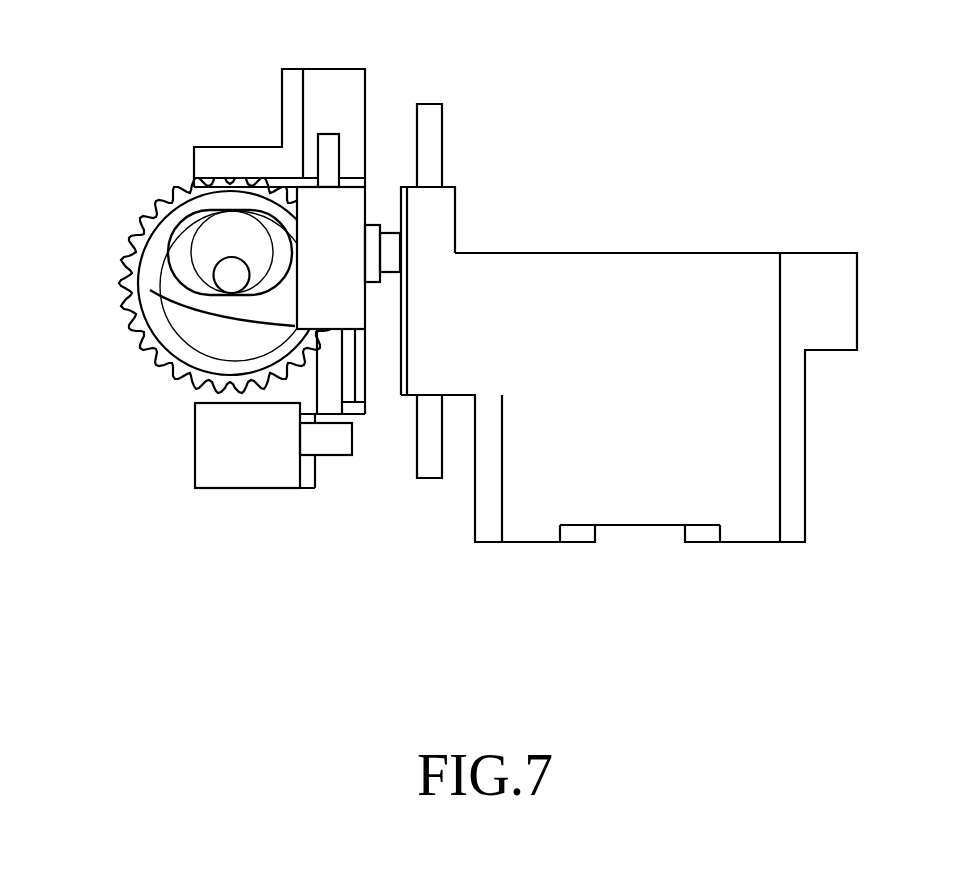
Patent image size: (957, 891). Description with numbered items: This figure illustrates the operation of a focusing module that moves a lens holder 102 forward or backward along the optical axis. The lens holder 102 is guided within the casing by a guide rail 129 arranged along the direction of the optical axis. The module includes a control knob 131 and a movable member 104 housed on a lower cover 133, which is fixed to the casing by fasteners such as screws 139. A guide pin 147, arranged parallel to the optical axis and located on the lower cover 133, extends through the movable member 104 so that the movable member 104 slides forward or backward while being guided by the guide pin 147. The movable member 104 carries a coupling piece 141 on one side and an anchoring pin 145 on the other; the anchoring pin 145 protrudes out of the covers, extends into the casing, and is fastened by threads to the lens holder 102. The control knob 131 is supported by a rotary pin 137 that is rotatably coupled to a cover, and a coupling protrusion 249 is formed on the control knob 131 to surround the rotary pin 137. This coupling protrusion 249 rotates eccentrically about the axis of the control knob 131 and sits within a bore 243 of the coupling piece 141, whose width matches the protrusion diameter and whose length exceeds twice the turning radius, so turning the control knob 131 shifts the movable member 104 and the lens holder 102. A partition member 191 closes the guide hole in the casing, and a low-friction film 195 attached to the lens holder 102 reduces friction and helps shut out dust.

The lens holder 102 is at (722, 258).
The movable member 104 is at (337, 205).
The guide rail 129 is at (427, 465).
The control knob 131 is at (128, 258).
The lower cover 133 is at (213, 447).
The rotary pin 137 is at (223, 277).
The screw 139 is at (322, 438).
The coupling piece 141 is at (228, 205).
The anchoring pin 145 is at (388, 250).
The guide pin 147 is at (332, 146).
The partition member 191 is at (367, 385).
The low-friction film 195 is at (398, 327).
The bore 243 is at (278, 274).
The coupling protrusion 249 is at (207, 241).